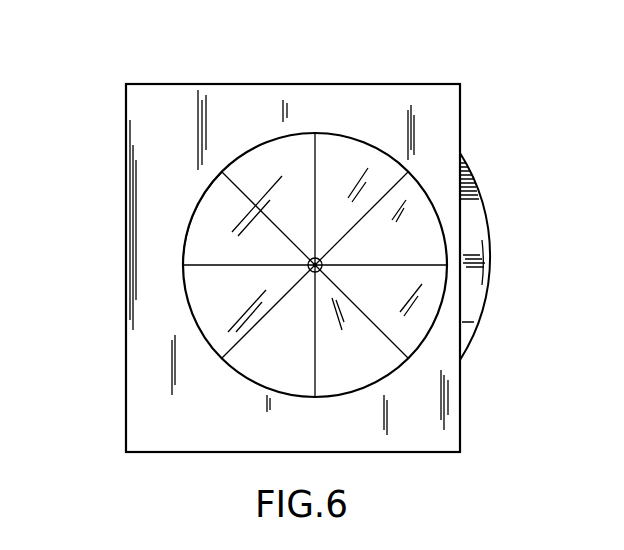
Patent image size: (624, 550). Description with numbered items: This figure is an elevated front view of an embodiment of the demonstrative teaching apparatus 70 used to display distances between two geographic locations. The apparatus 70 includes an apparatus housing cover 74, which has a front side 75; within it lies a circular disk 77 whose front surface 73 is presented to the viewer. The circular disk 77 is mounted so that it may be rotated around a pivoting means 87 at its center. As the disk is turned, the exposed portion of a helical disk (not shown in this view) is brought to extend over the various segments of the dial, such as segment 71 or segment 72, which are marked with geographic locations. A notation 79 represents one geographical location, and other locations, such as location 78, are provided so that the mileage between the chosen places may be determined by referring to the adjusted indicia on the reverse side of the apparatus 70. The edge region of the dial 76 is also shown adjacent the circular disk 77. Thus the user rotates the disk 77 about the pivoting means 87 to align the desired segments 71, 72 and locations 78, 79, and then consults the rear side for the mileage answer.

The demonstrative teaching apparatus 70 is at (223, 80).
The segment 71 is at (355, 160).
The segment 72 is at (413, 195).
The front surface 73 is at (468, 220).
The apparatus housing cover 74 is at (280, 80).
The front side 75 is at (160, 97).
The dial edge 76 is at (193, 212).
The circular disk 77 is at (498, 280).
The location 78 is at (296, 428).
The notation 79 is at (443, 250).
The pivoting means 87 is at (315, 266).